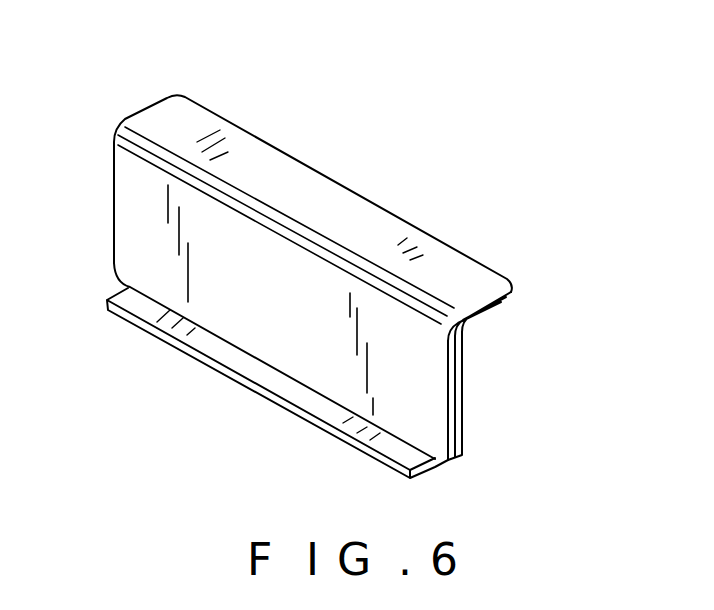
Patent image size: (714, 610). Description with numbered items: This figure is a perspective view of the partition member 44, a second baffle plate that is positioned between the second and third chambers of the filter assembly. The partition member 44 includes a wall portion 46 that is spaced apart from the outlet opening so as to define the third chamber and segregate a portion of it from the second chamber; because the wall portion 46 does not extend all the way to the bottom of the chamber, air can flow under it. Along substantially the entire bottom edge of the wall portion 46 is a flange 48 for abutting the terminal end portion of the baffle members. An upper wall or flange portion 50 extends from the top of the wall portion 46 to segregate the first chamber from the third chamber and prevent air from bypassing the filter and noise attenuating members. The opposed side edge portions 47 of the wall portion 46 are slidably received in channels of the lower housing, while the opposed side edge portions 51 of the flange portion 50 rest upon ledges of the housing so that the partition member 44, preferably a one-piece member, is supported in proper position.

The partition member 44 is at (302, 264).
The wall portion 46 is at (177, 255).
The side edge portions 47 is at (114, 181).
The flange 48 is at (273, 393).
The flange portion 50 is at (357, 222).
The side edge portions 51 is at (148, 108).